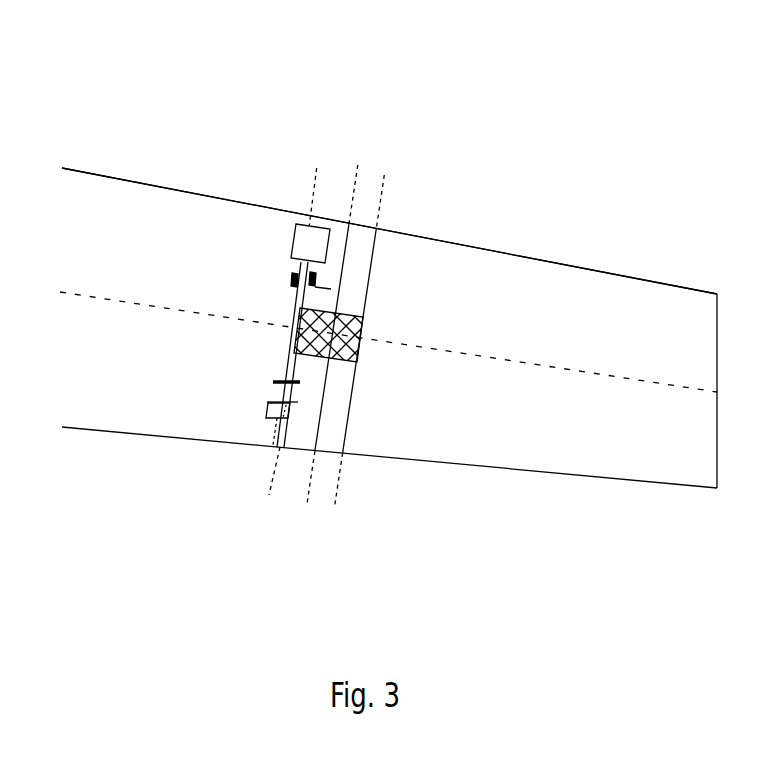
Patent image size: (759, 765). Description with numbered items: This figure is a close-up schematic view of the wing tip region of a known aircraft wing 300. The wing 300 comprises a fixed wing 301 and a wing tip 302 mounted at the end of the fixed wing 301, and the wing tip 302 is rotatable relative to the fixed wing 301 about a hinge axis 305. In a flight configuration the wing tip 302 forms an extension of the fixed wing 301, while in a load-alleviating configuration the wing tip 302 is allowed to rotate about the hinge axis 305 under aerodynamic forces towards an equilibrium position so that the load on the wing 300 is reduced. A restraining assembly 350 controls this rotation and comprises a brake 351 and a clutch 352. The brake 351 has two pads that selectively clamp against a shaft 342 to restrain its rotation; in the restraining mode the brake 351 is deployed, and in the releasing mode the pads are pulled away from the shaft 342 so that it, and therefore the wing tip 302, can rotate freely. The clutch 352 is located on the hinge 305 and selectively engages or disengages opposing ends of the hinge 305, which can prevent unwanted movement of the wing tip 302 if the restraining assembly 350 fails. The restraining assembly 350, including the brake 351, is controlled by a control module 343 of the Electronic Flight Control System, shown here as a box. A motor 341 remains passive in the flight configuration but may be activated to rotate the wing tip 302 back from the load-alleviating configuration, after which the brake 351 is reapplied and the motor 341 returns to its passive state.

The aircraft wing 300 is at (371, 257).
The fixed wing 301 is at (371, 280).
The wing tip 302 is at (389, 391).
The hinge axis 305 is at (268, 495).
The motor 341 is at (308, 235).
The shaft 342 is at (289, 358).
The control module 343 is at (363, 317).
The restraining assembly 350 is at (212, 163).
The brake 351 is at (291, 279).
The clutch 352 is at (273, 382).